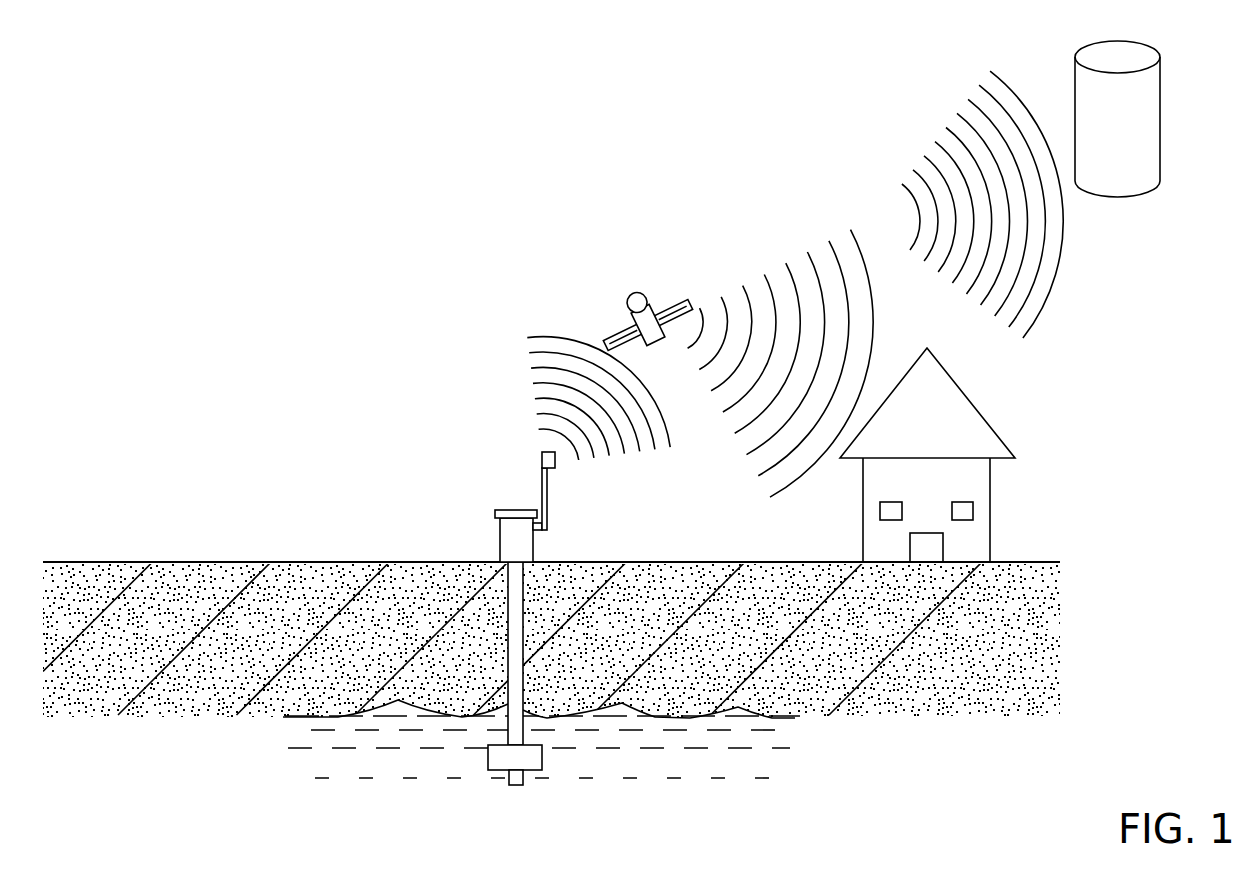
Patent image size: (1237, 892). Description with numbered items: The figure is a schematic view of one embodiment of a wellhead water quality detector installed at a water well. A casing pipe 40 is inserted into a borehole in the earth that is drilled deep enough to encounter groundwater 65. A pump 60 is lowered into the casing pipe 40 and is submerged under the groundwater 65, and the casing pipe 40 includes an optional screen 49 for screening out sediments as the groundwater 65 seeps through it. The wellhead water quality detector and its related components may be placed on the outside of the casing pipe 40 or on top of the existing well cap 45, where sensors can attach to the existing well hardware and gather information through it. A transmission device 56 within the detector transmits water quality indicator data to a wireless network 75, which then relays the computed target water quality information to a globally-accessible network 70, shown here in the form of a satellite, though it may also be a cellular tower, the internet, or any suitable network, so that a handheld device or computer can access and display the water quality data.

The casing pipe 40 is at (508, 613).
The well cap 45 is at (512, 509).
The screen 49 is at (514, 786).
The transmission device 56 is at (547, 492).
The pump 60 is at (542, 757).
The groundwater 65 is at (685, 758).
The globally-accessible network 70 is at (1057, 60).
The wireless network 75 is at (670, 428).